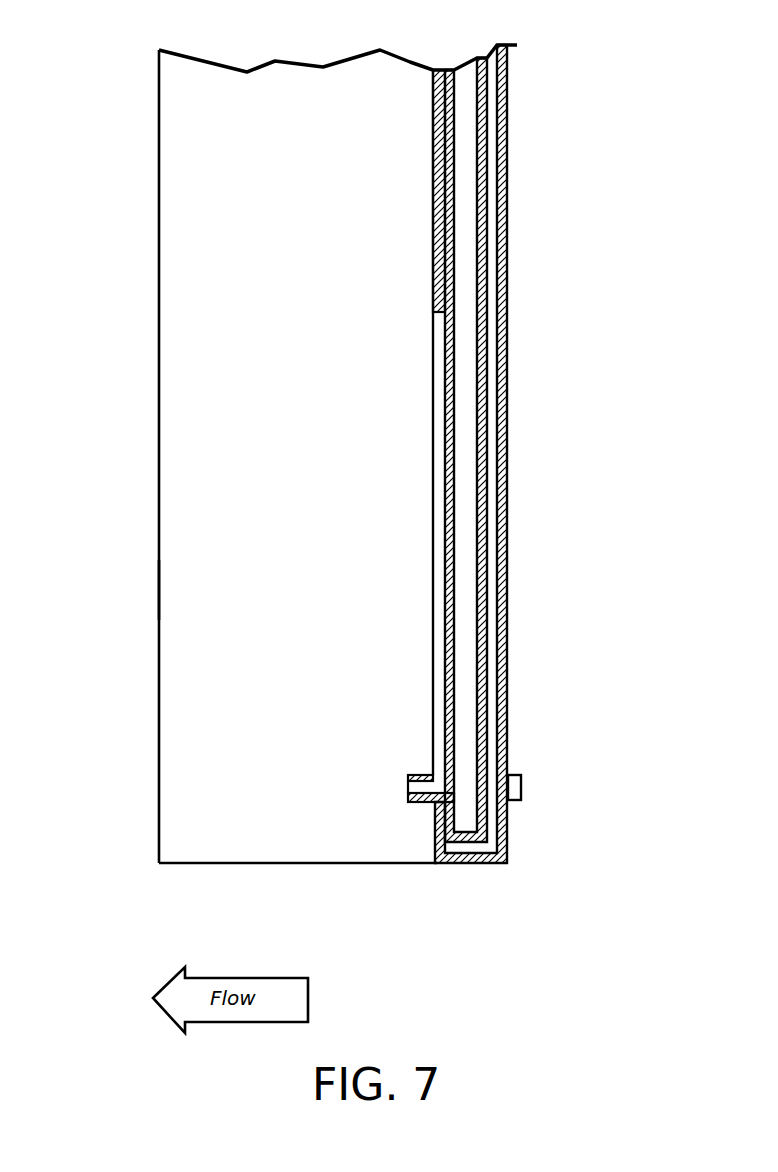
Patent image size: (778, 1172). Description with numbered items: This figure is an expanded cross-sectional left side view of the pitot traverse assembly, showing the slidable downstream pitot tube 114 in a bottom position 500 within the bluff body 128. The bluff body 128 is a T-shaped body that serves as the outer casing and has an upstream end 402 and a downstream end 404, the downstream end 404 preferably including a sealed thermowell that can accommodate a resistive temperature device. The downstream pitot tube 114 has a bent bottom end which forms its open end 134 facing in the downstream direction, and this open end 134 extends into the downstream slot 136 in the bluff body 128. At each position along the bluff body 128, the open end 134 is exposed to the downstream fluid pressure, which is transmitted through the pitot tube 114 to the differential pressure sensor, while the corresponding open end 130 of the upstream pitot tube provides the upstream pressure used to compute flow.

The slidable downstream pitot tube 114 is at (462, 516).
The bluff body 128 is at (158, 593).
The open end 130 is at (521, 788).
The open end 134 is at (420, 786).
The downstream slot 136 is at (436, 326).
The upstream end 402 is at (526, 578).
The downstream end 404 is at (140, 742).
The bottom position 500 is at (546, 840).